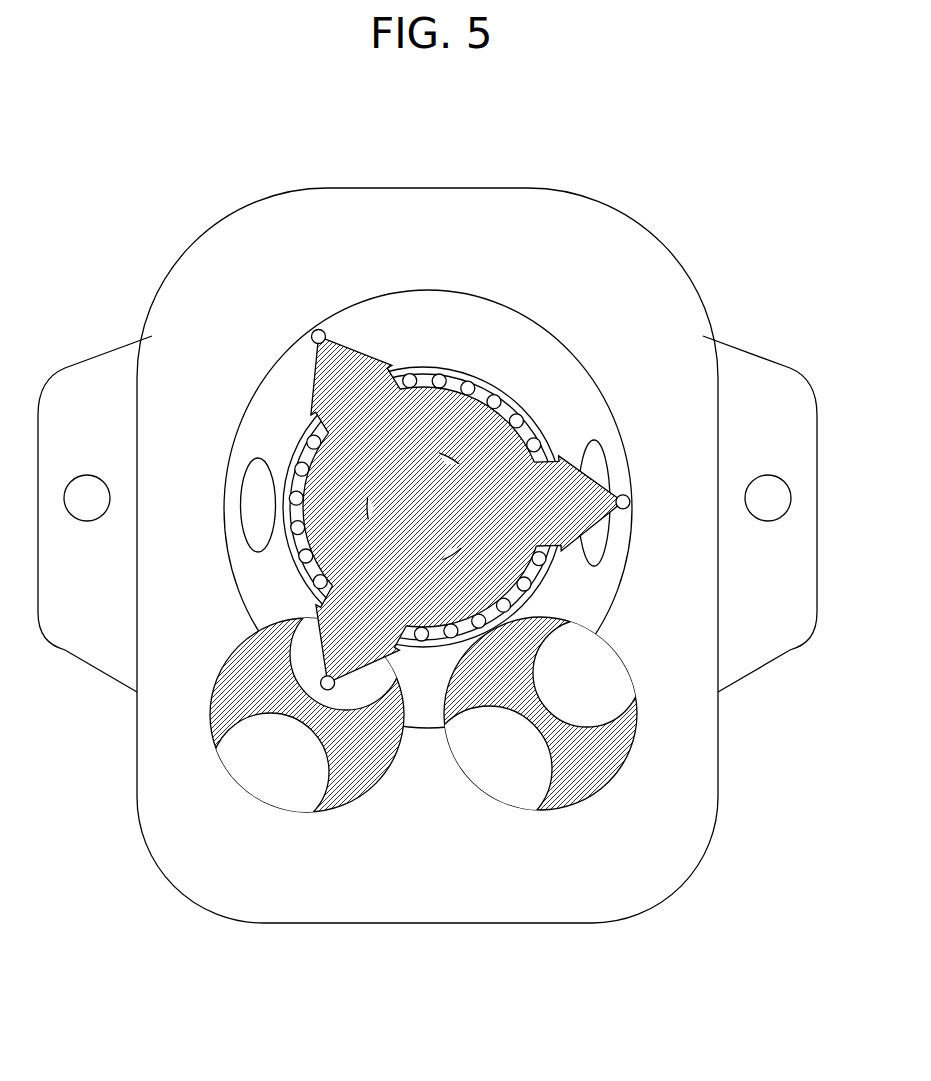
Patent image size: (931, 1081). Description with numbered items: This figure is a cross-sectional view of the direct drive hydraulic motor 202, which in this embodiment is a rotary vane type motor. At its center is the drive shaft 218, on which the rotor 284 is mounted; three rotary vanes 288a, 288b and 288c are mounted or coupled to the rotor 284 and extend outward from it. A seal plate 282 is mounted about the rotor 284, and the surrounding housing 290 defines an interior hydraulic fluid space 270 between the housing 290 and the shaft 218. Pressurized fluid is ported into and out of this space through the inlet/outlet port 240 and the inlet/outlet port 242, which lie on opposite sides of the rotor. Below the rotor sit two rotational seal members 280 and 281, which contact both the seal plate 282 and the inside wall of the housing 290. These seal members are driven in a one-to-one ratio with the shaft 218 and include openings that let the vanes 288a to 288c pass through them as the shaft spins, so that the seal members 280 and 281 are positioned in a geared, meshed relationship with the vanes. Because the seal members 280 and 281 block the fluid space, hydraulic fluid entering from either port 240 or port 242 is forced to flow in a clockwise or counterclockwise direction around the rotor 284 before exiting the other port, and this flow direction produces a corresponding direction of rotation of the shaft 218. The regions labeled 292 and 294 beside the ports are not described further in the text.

The direct drive hydraulic motor 202 is at (192, 246).
The drive shaft 218 is at (425, 483).
The interior hydraulic fluid space 270 is at (512, 350).
The inlet/outlet port 242 is at (590, 395).
The inlet chamber 292 is at (264, 432).
The outlet chamber 294 is at (613, 446).
The inlet/outlet port 240 is at (260, 545).
The rotary vane 288a is at (320, 330).
The rotary vane 288b is at (314, 655).
The rotary vane 288c is at (620, 511).
The seal plate 282 is at (533, 583).
The rotor 284 is at (426, 687).
The rotational seal member 280 is at (347, 810).
The rotational seal member 281 is at (553, 810).
The housing 290 is at (158, 726).